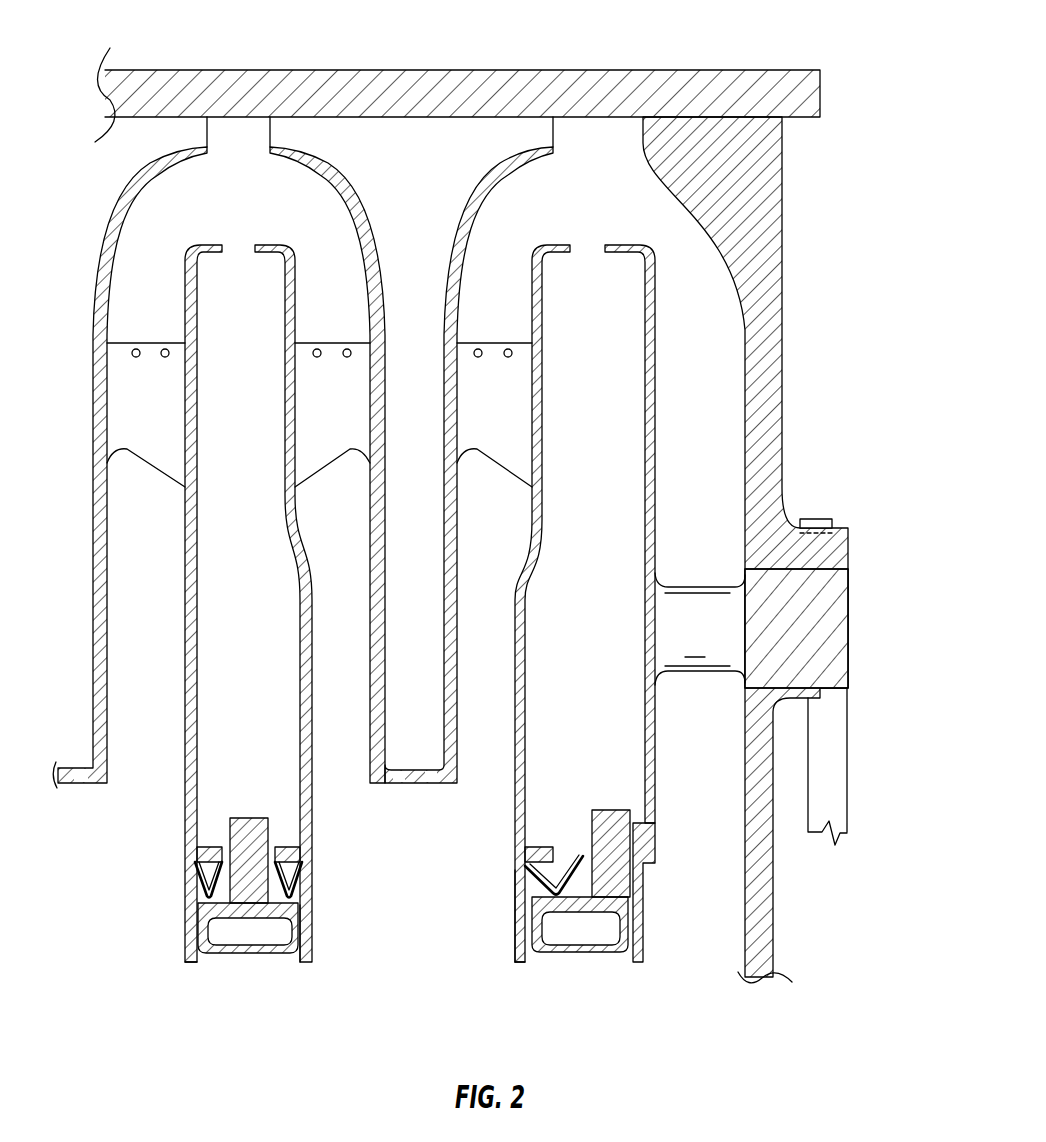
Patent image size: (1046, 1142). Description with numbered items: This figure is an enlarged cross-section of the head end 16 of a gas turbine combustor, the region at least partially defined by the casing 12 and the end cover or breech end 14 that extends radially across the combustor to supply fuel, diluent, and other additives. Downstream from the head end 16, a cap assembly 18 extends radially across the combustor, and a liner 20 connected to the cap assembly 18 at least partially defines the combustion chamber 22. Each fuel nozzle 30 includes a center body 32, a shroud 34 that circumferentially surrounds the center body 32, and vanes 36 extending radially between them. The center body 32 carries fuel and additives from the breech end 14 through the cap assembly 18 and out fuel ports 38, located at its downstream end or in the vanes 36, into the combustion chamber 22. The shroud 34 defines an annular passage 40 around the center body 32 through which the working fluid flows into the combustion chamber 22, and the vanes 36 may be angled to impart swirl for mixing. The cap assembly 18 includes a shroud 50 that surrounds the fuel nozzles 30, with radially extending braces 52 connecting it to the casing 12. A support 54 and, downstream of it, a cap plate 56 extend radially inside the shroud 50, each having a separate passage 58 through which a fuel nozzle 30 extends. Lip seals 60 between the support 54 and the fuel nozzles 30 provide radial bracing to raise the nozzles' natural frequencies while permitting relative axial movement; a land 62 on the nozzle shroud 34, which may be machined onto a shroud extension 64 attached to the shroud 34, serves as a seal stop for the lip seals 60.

The casing 12 is at (782, 332).
The breech end 14 is at (740, 70).
The head end 16 is at (830, 456).
The cap assembly 18 is at (848, 572).
The liner 20 is at (645, 888).
The combustion chamber 22 is at (441, 936).
The fuel nozzle 30 is at (497, 245).
The center body 32 is at (93, 338).
The shroud 34 is at (285, 316).
The vane 36 is at (154, 424).
The fuel port 38 is at (136, 357).
The annular passage 40 is at (354, 511).
The shroud 50 is at (653, 690).
The brace 52 is at (697, 587).
The support 54 is at (243, 918).
The cap plate 56 is at (208, 955).
The passage 58 is at (193, 972).
The lip seal 60 is at (280, 882).
The land 62 is at (292, 848).
The shroud extension 64 is at (315, 912).